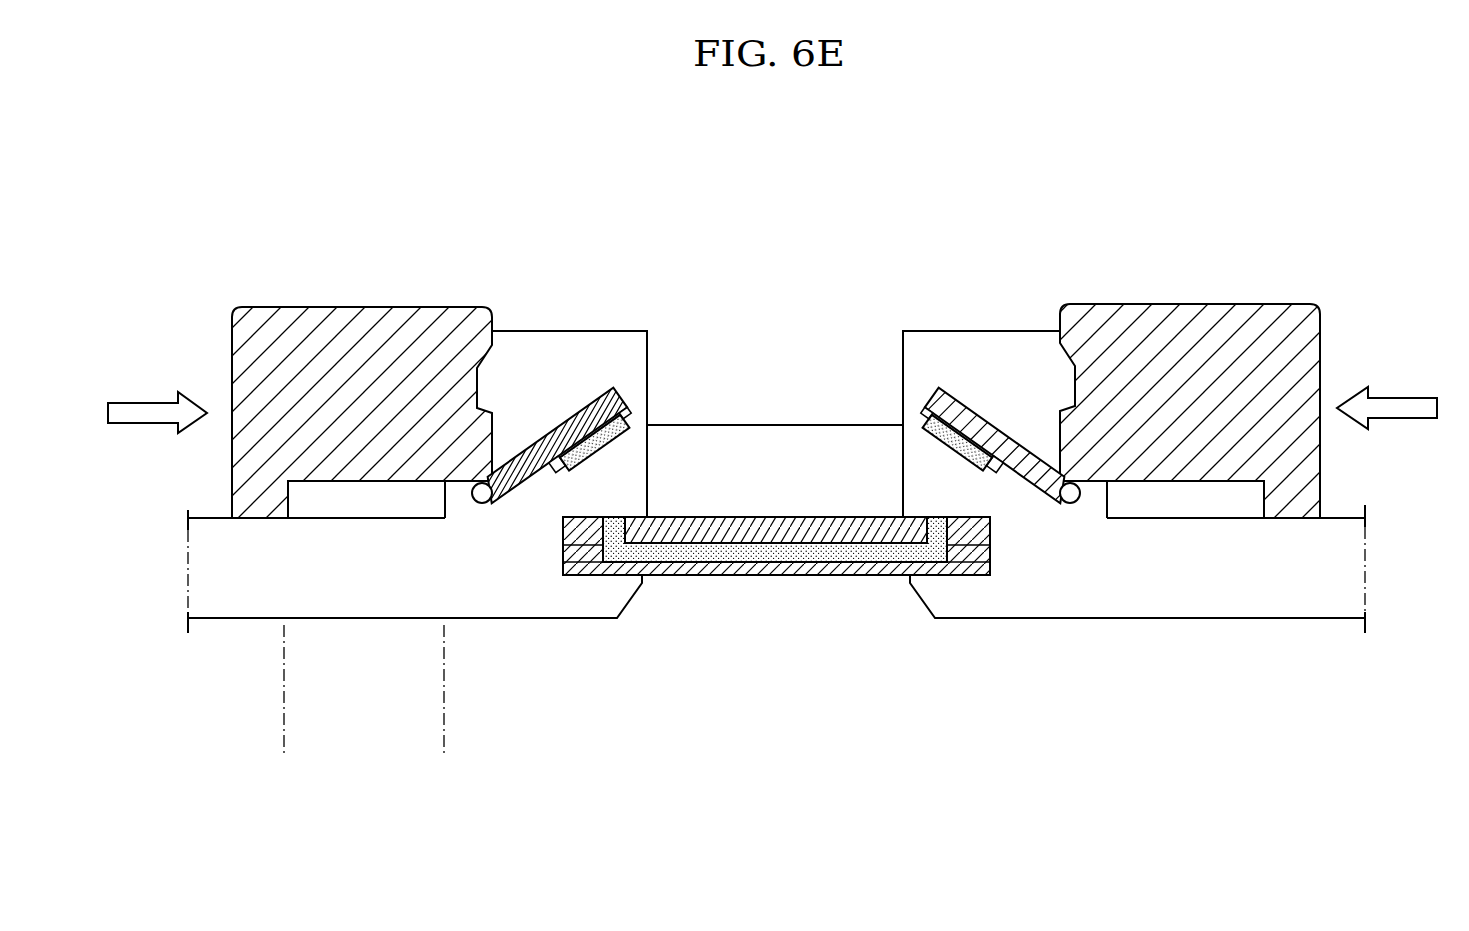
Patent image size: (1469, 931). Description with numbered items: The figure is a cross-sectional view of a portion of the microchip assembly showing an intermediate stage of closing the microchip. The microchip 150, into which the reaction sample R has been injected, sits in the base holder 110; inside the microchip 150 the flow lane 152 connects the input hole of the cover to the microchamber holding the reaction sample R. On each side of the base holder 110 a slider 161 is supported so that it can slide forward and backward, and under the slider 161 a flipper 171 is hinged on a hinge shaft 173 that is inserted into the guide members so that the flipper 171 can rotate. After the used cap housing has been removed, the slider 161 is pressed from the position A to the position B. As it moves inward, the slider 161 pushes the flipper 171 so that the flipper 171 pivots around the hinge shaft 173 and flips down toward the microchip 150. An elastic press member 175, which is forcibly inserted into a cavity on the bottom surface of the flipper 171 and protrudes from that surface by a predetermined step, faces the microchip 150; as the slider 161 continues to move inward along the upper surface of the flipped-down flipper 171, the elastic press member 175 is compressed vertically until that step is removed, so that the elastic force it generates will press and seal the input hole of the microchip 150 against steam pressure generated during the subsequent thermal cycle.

The base holder 110 is at (1347, 563).
The microchip 150 is at (776, 619).
The flow lane 152 is at (677, 560).
The reaction sample R is at (888, 557).
The slider 161 is at (1127, 320).
The flipper 171 is at (593, 397).
The hinge shaft 173 is at (477, 503).
The elastic press member 175 is at (617, 392).
The position A is at (284, 711).
The position B is at (444, 708).